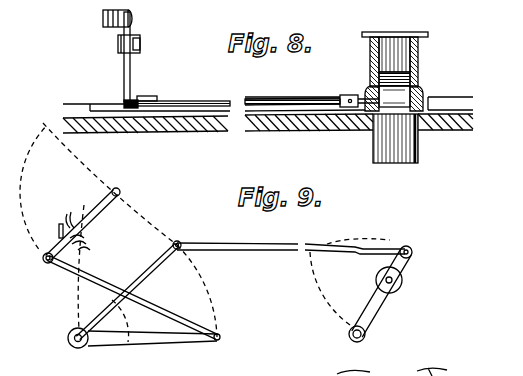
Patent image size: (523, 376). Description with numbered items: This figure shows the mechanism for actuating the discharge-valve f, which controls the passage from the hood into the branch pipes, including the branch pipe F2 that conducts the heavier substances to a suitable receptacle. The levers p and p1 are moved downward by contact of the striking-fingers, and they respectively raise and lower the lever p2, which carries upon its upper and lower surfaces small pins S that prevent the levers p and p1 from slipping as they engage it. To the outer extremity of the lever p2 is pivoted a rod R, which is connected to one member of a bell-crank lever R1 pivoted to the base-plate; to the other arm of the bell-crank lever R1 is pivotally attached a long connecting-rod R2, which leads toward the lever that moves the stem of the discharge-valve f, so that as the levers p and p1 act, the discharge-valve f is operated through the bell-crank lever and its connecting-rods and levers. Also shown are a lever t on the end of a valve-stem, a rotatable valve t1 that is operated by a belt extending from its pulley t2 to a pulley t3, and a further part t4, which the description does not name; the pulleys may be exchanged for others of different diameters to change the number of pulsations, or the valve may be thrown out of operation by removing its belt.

In FIG. 8, the connecting-rod R2 is at (103, 16).
In FIG. 9, the connecting-rod R2 is at (214, 246).
In FIG. 9, the rod R is at (103, 282).
In FIG. 9, the bell-crank lever R1 is at (122, 340).
In FIG. 8, the lever t is at (131, 75).
In FIG. 9, the lever t is at (385, 313).
In FIG. 9, the rotatable valve t1 is at (375, 246).
In FIG. 8, the pulley t2 is at (262, 97).
In FIG. 9, the pulley t2 is at (366, 340).
In FIG. 8, the pulley t3 is at (348, 95).
In FIG. 8, the roller t4 is at (140, 36).
In FIG. 9, the roller t4 is at (402, 281).
In FIG. 8, the discharge-valve f is at (418, 78).
In FIG. 8, the branch pipe F2 is at (400, 147).
In FIG. 9, the lever p is at (48, 264).
In FIG. 9, the lever p1 is at (59, 231).
In FIG. 9, the lever p2 is at (94, 200).
In FIG. 9, the small pins S is at (86, 234).